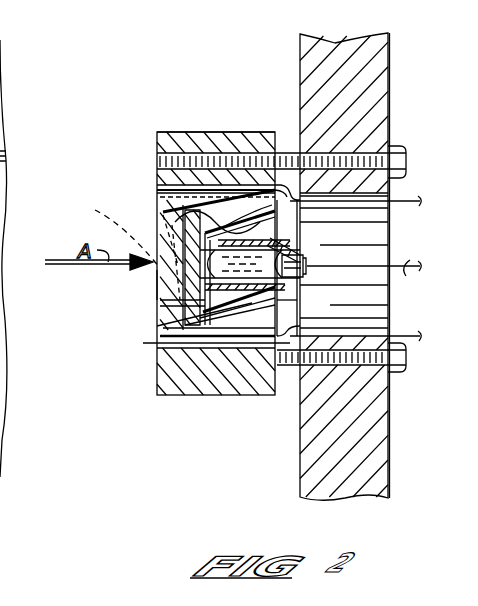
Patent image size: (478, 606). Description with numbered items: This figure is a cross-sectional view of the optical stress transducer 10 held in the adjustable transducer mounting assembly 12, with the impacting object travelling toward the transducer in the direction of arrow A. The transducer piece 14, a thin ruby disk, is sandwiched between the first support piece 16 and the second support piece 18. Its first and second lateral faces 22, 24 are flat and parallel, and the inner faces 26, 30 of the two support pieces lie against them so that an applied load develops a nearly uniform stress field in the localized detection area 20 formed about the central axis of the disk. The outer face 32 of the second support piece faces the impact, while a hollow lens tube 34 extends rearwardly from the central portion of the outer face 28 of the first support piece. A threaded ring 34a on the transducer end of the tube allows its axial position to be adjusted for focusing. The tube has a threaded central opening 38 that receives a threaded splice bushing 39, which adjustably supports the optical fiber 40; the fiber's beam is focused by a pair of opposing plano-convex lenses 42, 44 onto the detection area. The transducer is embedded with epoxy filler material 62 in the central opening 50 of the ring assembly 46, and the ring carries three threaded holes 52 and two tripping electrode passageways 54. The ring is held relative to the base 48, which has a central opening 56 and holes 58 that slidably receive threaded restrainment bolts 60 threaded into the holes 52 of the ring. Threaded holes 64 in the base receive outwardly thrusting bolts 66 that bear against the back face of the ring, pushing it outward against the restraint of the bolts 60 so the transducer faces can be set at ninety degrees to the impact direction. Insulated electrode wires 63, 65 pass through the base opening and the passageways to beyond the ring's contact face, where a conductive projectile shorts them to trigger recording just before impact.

The optical stress transducer 10 is at (150, 280).
The adjustable transducer mounting assembly 12 is at (232, 82).
The transducer piece 14 is at (168, 240).
The first support piece 16 is at (172, 380).
The second support piece 18 is at (160, 328).
The localized detection area 20 is at (125, 247).
The first lateral face 22 is at (170, 320).
The second lateral face 24 is at (160, 301).
The inner face of first support piece 26 is at (184, 200).
The outer face of first support piece 28 is at (220, 200).
The inner face of second support piece 30 is at (162, 188).
The outer face of second support piece 32 is at (165, 212).
The hollow lens tube 34 is at (293, 229).
The threaded ring 34a is at (256, 216).
The central opening of lens tube 38 is at (301, 252).
The threaded splice bushing 39 is at (306, 263).
The optical fiber 40 is at (408, 261).
The plano-convex lens 42 is at (287, 260).
The plano-convex lens 44 is at (288, 318).
The ring assembly 46 is at (172, 398).
The base 48 is at (300, 478).
The central opening of ring 50 is at (143, 343).
The threaded holes 52 is at (160, 160).
The tripping electrode passageways 54 is at (240, 165).
The central opening of base 56 is at (380, 322).
The holes in base 58 is at (368, 150).
The threaded restrainment bolts 60 is at (406, 160).
The filler or mounting material 62 is at (262, 395).
The insulated electrode wire 63 is at (410, 338).
The threaded holes in base 64 is at (370, 372).
The insulated electrode wire 65 is at (412, 212).
The outwardly thrusting bolts 66 is at (406, 368).